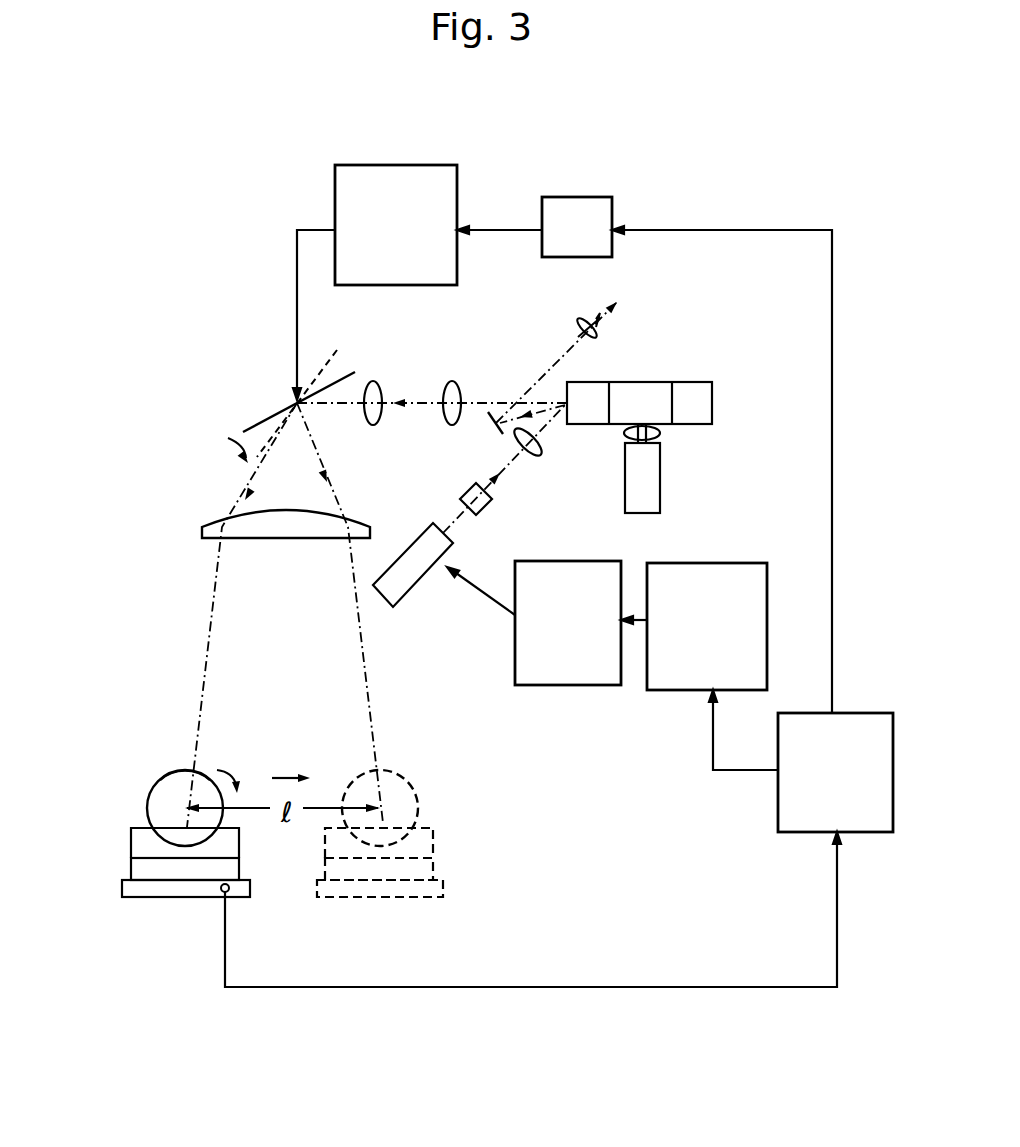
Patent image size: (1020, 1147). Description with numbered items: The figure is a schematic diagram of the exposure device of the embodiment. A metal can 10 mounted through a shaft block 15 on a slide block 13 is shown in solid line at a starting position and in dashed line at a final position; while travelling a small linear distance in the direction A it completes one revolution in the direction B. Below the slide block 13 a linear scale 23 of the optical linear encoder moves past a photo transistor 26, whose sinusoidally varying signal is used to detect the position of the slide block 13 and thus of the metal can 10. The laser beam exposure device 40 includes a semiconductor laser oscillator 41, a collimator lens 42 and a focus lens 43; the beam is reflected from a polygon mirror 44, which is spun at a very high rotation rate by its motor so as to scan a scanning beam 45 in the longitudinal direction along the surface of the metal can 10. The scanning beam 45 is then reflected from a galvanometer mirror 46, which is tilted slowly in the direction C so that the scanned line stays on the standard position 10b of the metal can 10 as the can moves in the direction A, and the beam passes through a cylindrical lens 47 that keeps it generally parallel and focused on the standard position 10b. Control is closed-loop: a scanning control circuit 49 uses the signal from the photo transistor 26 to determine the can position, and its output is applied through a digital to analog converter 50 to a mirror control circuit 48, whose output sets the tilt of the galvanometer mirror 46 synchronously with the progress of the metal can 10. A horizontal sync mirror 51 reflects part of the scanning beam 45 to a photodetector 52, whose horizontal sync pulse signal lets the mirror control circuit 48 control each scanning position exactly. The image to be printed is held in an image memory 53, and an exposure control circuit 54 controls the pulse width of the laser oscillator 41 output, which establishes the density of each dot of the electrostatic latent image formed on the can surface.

The metal can 10 is at (151, 790).
The standard position 10b is at (190, 772).
The slide block 13 is at (140, 868).
The shaft block 15 is at (140, 840).
The linear scale 23 is at (138, 899).
The photo transistor 26 is at (222, 892).
The laser beam exposure device 40 is at (520, 356).
The semiconductor laser oscillator 41 is at (405, 543).
The collimator lens 42 is at (484, 504).
The focus lens 43 is at (537, 458).
The polygon mirror 44 is at (608, 382).
The scanning beam 45 is at (483, 398).
The galvanometer mirror 46 is at (338, 372).
The cylindrical lens 47 is at (214, 522).
The mirror control circuit 48 is at (392, 165).
The scanning control circuit 49 is at (848, 713).
The digital to analog converter 50 is at (573, 197).
The horizontal sync mirror 51 is at (482, 430).
The photodetector 52 is at (605, 318).
The image memory 53 is at (697, 563).
The exposure control circuit 54 is at (562, 561).
The direction of linear travel A is at (284, 775).
The direction of revolution B is at (228, 768).
The direction of tilt of galvanometer mirror C is at (232, 444).